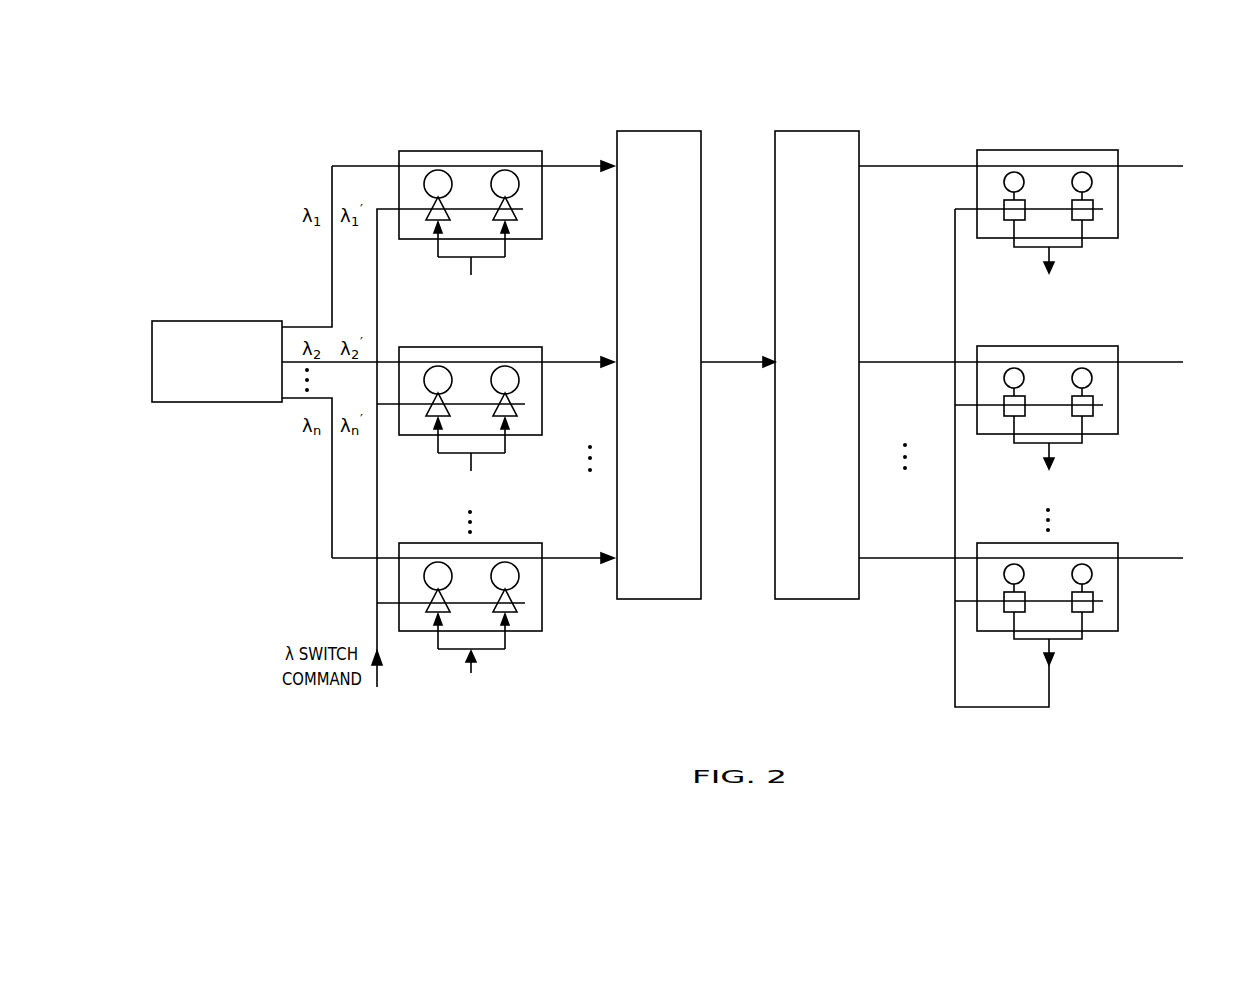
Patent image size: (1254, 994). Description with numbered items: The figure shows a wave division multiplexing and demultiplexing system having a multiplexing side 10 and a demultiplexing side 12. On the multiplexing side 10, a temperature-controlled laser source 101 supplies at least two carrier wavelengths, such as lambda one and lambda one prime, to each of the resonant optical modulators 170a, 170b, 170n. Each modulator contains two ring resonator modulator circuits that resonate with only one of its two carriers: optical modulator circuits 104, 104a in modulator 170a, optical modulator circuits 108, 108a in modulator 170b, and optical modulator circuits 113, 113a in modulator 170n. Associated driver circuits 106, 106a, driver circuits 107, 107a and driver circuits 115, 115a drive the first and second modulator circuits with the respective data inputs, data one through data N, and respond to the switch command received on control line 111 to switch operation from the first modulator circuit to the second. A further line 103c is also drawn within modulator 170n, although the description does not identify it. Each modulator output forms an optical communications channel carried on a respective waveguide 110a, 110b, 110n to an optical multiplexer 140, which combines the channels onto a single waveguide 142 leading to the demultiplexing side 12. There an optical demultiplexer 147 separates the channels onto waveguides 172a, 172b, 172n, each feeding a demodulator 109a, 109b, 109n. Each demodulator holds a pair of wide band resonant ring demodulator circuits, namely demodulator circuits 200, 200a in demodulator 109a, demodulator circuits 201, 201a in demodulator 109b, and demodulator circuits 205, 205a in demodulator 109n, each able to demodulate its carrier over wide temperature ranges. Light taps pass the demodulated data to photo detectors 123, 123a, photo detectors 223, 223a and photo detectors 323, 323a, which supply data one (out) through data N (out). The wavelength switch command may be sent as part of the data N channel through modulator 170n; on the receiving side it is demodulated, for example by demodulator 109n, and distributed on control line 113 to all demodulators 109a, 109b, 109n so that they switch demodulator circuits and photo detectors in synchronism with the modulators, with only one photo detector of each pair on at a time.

The multiplexing side 10 is at (499, 81).
The demultiplexing side 12 is at (1054, 80).
The laser source 101 is at (222, 320).
The optical modulator circuit 104 is at (440, 175).
The optical modulator circuit 104a is at (517, 188).
The driver circuit 106 is at (430, 216).
The driver circuit 106a is at (512, 214).
The driver circuit 107 is at (430, 412).
The driver circuit 107a is at (512, 410).
The optical modulator circuit 108 is at (440, 371).
The optical modulator circuit 108a is at (517, 384).
The demodulator 109a is at (1100, 150).
The demodulator 109b is at (1100, 346).
The demodulator 109n is at (1100, 543).
The waveguide 110a is at (571, 165).
The waveguide 110b is at (571, 361).
The waveguide 110n is at (571, 557).
The control line 111 is at (375, 581).
The control line 113 is at (436, 567).
The optical modulator circuit 113a is at (518, 580).
The driver circuit 115 is at (432, 616).
The driver circuit 115a is at (509, 616).
The switch control line 103c is at (528, 618).
The photo detector 123 is at (1008, 220).
The photo detector 123a is at (1092, 212).
The optical multiplexer 140 is at (658, 130).
The waveguide 142 is at (742, 361).
The optical demultiplexer 147 is at (820, 130).
The resonant optical modulator 170a is at (518, 150).
The resonant optical modulator 170b is at (518, 346).
The resonant optical modulator 170n is at (518, 542).
The waveguide 172a is at (902, 165).
The waveguide 172b is at (902, 361).
The waveguide 172n is at (902, 557).
The resonant ring demodulator circuit 200 is at (1010, 173).
The resonant ring demodulator circuit 200a is at (1078, 173).
The demodulator circuit 201 is at (1010, 369).
The demodulator circuit 201a is at (1078, 369).
The demodulator circuit 205 is at (1010, 565).
The demodulator circuit 205a is at (1080, 565).
The photo detector 223 is at (1008, 416).
The photo detector 223a is at (1092, 408).
The photo detector 323 is at (1008, 612).
The photo detector 323a is at (1092, 605).